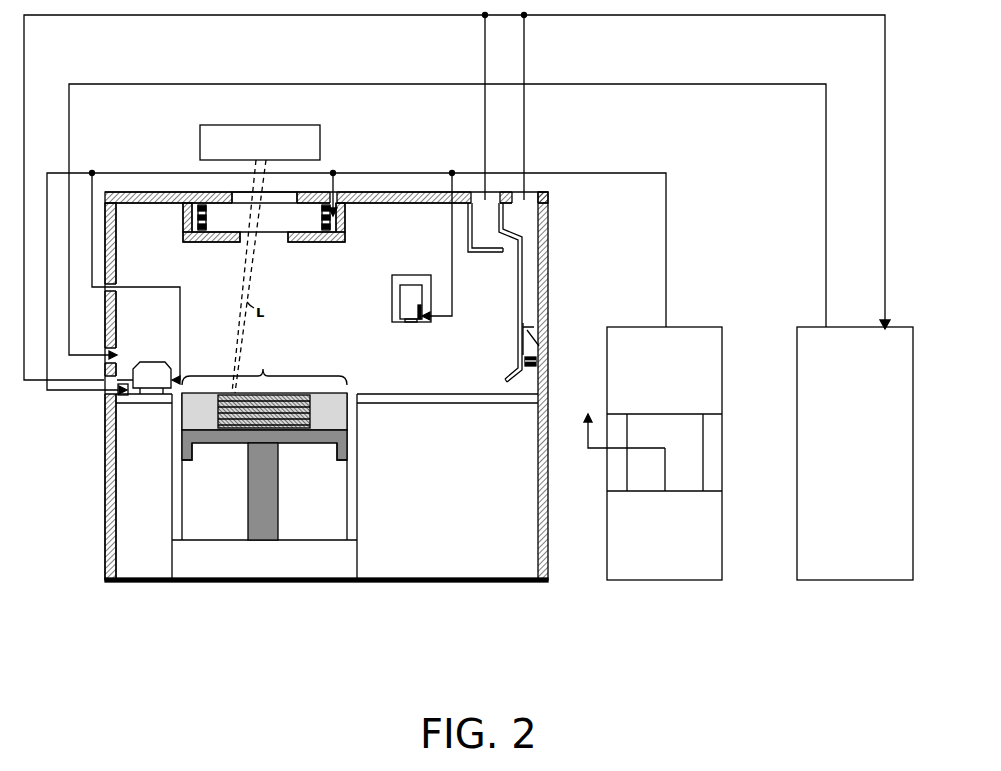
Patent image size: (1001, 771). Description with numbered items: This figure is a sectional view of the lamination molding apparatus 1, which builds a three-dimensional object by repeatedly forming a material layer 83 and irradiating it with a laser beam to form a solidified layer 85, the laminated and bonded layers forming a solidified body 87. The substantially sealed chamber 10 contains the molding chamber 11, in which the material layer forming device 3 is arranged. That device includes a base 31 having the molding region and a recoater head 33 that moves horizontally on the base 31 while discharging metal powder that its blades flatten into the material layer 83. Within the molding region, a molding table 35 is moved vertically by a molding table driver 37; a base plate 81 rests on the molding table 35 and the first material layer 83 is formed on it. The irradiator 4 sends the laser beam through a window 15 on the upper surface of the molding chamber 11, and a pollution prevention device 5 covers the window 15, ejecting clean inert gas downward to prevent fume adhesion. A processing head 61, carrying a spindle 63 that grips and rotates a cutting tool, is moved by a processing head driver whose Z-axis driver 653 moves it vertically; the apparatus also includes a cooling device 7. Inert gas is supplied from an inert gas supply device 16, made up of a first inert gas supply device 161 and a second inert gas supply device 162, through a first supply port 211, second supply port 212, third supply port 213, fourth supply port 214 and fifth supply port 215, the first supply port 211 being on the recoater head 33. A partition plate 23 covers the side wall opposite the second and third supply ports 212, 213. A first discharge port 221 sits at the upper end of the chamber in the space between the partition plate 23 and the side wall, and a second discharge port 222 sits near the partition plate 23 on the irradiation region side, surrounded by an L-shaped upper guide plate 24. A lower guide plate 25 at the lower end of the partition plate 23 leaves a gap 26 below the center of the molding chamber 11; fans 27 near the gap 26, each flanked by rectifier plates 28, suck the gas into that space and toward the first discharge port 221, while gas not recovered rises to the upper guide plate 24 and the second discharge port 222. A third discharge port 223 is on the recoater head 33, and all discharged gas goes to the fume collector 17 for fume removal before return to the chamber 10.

The lamination molding apparatus 1 is at (86, 70).
The material layer forming device 3 is at (276, 455).
The irradiator 4 is at (299, 133).
The pollution prevention device 5 is at (218, 243).
The cooling device 7 is at (423, 308).
The chamber 10 is at (553, 264).
The molding chamber 11 is at (350, 288).
The window 15 is at (240, 193).
The inert gas supply device 16 is at (650, 416).
The fume collector 17 is at (905, 334).
The partition plate 23 is at (517, 303).
The upper guide plate 24 is at (490, 253).
The lower guide plate 25 is at (510, 377).
The gap 26 is at (511, 358).
The fan 27 is at (530, 368).
The rectifier plate 28 is at (528, 338).
The base 31 is at (166, 406).
The recoater head 33 is at (152, 388).
The molding table 35 is at (207, 450).
The molding table driver 37 is at (282, 468).
The processing head 61 is at (400, 305).
The spindle 63 is at (408, 323).
The base plate 81 is at (287, 443).
The material layer 83 is at (290, 396).
The solidified layer 85 is at (224, 430).
The solidified body 87 is at (322, 410).
The first inert gas supply device 161 is at (625, 333).
The second inert gas supply device 162 is at (612, 518).
The first supply port 211 is at (179, 368).
The second supply port 212 is at (122, 397).
The third supply port 213 is at (109, 348).
The fourth supply port 214 is at (591, 411).
The fifth supply port 215 is at (330, 194).
The first discharge port 221 is at (533, 196).
The second discharge port 222 is at (478, 196).
The third discharge port 223 is at (138, 366).
The Z-axis driver 653 is at (402, 278).